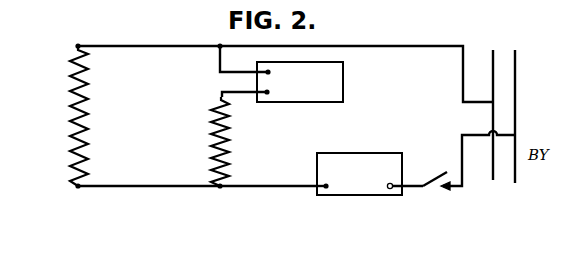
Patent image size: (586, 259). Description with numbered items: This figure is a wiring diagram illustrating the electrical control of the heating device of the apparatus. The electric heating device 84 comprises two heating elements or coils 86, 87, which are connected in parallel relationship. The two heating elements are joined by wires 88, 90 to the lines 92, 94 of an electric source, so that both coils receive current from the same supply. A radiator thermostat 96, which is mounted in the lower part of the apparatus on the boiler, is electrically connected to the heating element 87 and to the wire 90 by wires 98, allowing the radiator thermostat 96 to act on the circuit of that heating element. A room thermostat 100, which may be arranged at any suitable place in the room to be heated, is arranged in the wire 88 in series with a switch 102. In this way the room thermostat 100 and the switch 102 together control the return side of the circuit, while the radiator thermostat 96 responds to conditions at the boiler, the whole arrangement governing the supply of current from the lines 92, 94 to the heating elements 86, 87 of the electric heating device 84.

The electric heating device 84 is at (196, 136).
The heating element 86 is at (70, 122).
The heating element 87 is at (229, 140).
The wire 88 is at (265, 188).
The wire 90 is at (372, 46).
The line 92 is at (516, 80).
The line 94 is at (493, 52).
The radiator thermostat 96 is at (321, 103).
The wires 98 is at (222, 89).
The room thermostat 100 is at (365, 190).
The switch 102 is at (441, 192).